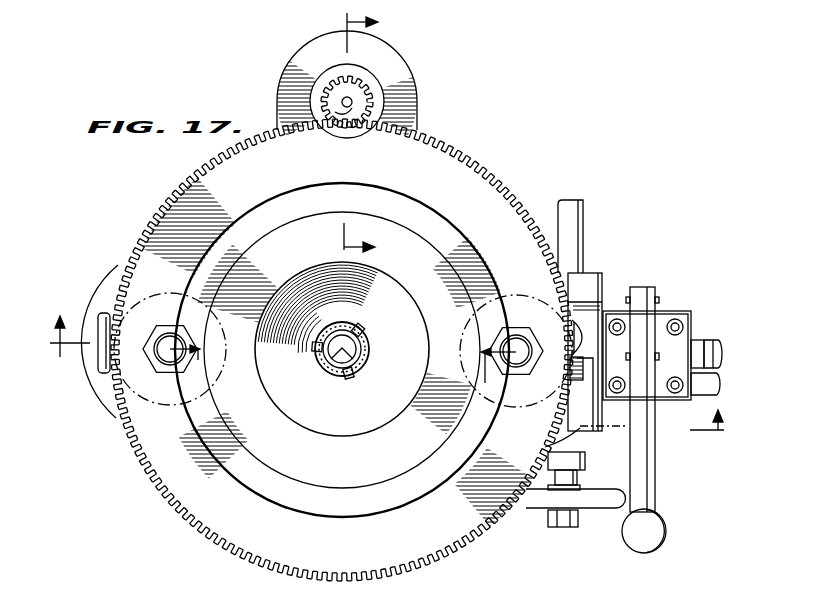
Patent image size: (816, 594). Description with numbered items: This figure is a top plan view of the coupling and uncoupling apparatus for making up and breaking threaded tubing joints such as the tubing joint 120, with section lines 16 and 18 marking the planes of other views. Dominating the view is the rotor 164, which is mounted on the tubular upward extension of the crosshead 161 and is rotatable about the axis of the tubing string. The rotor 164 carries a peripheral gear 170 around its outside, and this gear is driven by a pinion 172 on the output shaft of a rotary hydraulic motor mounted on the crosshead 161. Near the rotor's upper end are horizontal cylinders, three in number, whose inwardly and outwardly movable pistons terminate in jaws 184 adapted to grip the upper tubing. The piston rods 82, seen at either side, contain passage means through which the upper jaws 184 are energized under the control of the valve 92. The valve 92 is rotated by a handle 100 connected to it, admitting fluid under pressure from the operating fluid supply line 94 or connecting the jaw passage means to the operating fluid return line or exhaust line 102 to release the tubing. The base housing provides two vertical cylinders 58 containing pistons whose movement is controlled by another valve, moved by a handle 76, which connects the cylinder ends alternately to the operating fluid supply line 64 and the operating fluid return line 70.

The section line 16 is at (373, 384).
The section line 18 is at (372, 131).
The vertical cylinders 58 is at (130, 416).
The operating fluid supply line 64 is at (718, 340).
The operating fluid return line 70 is at (700, 340).
The handle 76 is at (655, 495).
The piston rods 82 is at (150, 363).
The valve 92 is at (552, 510).
The operating fluid supply line 94 is at (581, 226).
The handle 100 is at (602, 510).
The operating fluid return line or exhaust line 102 is at (707, 397).
The tubing joint 120 is at (325, 377).
The crosshead 161 is at (400, 78).
The rotor 164 is at (248, 475).
The peripheral gear 170 is at (175, 470).
The pinion 172 is at (372, 100).
The jaws 184 is at (358, 327).